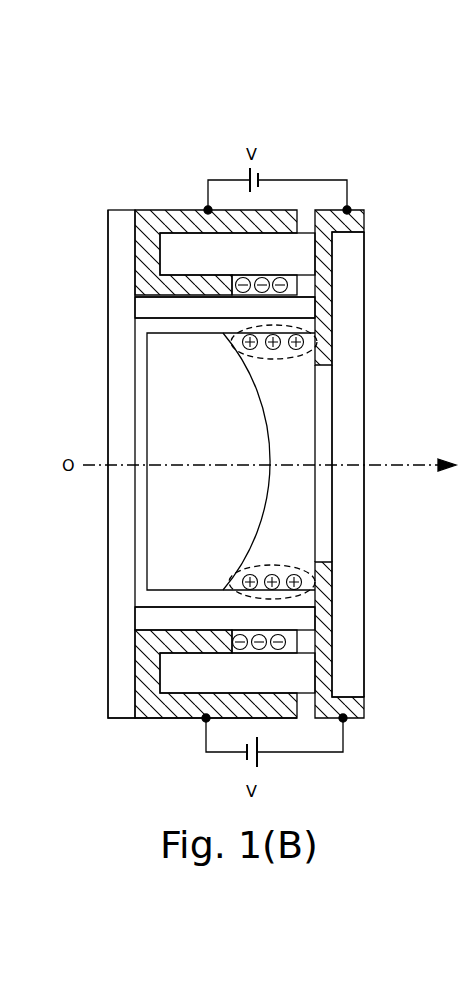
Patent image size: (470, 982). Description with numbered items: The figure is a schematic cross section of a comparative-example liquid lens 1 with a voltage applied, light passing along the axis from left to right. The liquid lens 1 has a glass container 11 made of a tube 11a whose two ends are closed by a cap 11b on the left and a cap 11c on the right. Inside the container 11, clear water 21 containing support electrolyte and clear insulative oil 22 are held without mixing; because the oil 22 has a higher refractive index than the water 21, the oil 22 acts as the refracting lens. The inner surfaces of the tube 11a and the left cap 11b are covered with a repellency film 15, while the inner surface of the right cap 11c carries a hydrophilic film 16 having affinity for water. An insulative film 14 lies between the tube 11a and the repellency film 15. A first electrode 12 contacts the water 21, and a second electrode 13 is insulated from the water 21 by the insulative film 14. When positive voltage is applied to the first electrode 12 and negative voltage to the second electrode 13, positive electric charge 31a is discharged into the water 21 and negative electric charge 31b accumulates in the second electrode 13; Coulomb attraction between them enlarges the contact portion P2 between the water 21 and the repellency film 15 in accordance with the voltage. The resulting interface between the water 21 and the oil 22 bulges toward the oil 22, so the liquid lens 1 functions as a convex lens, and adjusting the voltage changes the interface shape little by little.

The liquid lens 1 is at (372, 134).
The glass container 11 is at (300, 70).
The tube 11a is at (195, 250).
The cap 11b is at (122, 228).
The cap 11c is at (322, 238).
The first electrode 12 is at (356, 228).
The second electrode 13 is at (162, 212).
The insulative film 14 is at (300, 284).
The repellency film 15 is at (300, 323).
The hydrophilic film 16 is at (343, 507).
The water 21 is at (272, 391).
The oil 22 is at (180, 567).
The positive electric charge 31a is at (232, 334).
The negative electric charge 31b is at (152, 637).
The contact portion P2 is at (322, 346).